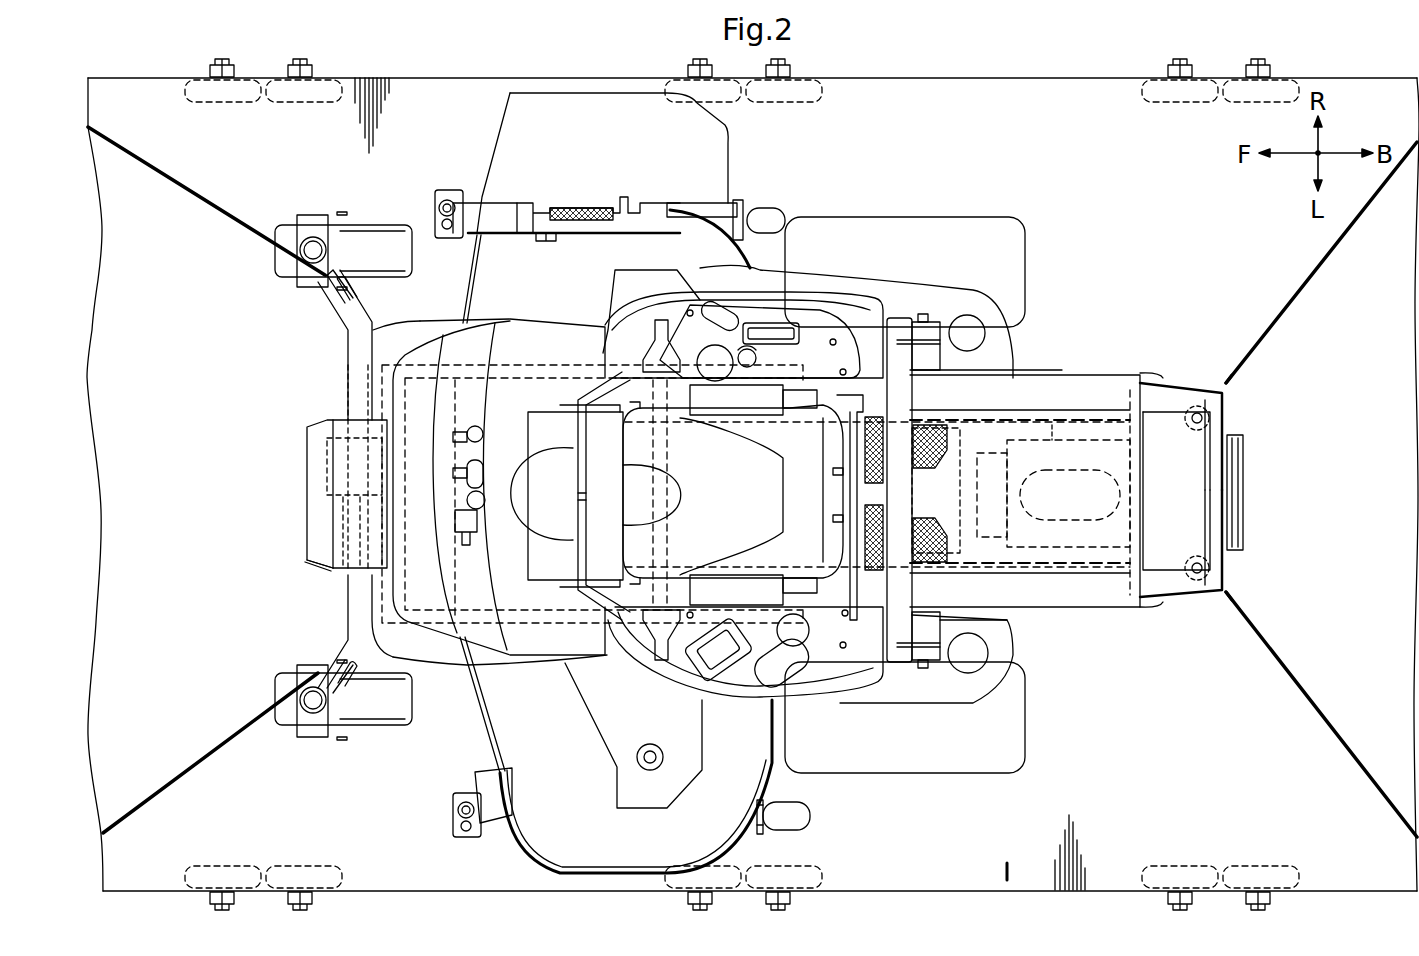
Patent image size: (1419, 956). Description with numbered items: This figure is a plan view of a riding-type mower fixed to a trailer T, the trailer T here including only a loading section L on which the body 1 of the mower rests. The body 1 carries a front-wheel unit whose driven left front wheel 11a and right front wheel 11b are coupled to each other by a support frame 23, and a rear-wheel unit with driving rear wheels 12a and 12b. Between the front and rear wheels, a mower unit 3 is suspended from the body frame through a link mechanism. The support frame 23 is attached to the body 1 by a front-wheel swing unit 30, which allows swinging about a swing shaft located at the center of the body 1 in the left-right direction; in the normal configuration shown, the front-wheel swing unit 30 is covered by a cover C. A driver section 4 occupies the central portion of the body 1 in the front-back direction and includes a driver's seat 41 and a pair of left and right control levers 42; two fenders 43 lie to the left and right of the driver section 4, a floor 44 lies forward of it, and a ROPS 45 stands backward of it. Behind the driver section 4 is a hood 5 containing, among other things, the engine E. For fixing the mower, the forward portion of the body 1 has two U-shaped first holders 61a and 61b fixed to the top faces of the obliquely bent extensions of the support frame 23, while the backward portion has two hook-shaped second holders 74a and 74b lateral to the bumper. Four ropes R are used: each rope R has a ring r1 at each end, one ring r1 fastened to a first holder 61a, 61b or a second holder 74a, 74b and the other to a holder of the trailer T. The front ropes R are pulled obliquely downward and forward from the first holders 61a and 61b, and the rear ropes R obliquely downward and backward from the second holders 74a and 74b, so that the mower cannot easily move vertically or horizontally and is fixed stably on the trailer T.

The trailer T is at (163, 66).
The body 1 is at (460, 118).
The mower unit 3 is at (478, 740).
The driver section 4 is at (748, 465).
The hood 5 is at (1097, 362).
The left front wheel 11a is at (377, 713).
The right front wheel 11b is at (375, 235).
The left rear wheel 12a is at (877, 773).
The right rear wheel 12b is at (973, 213).
The support frame 23 is at (345, 400).
The front-wheel swing unit 30 is at (330, 480).
The driver's seat 41 is at (630, 492).
The control levers 42 is at (556, 496).
The fenders 43 is at (640, 677).
The floor 44 is at (548, 637).
The ROPS 45 is at (900, 335).
The first holder 61a is at (345, 655).
The first holder 61b is at (338, 313).
The second holder 74a is at (1220, 555).
The second holder 74b is at (1218, 427).
The cover C is at (313, 565).
The engine E is at (1052, 425).
The loading section L is at (1007, 863).
The rope R is at (195, 197).
The ring r1 is at (325, 290).